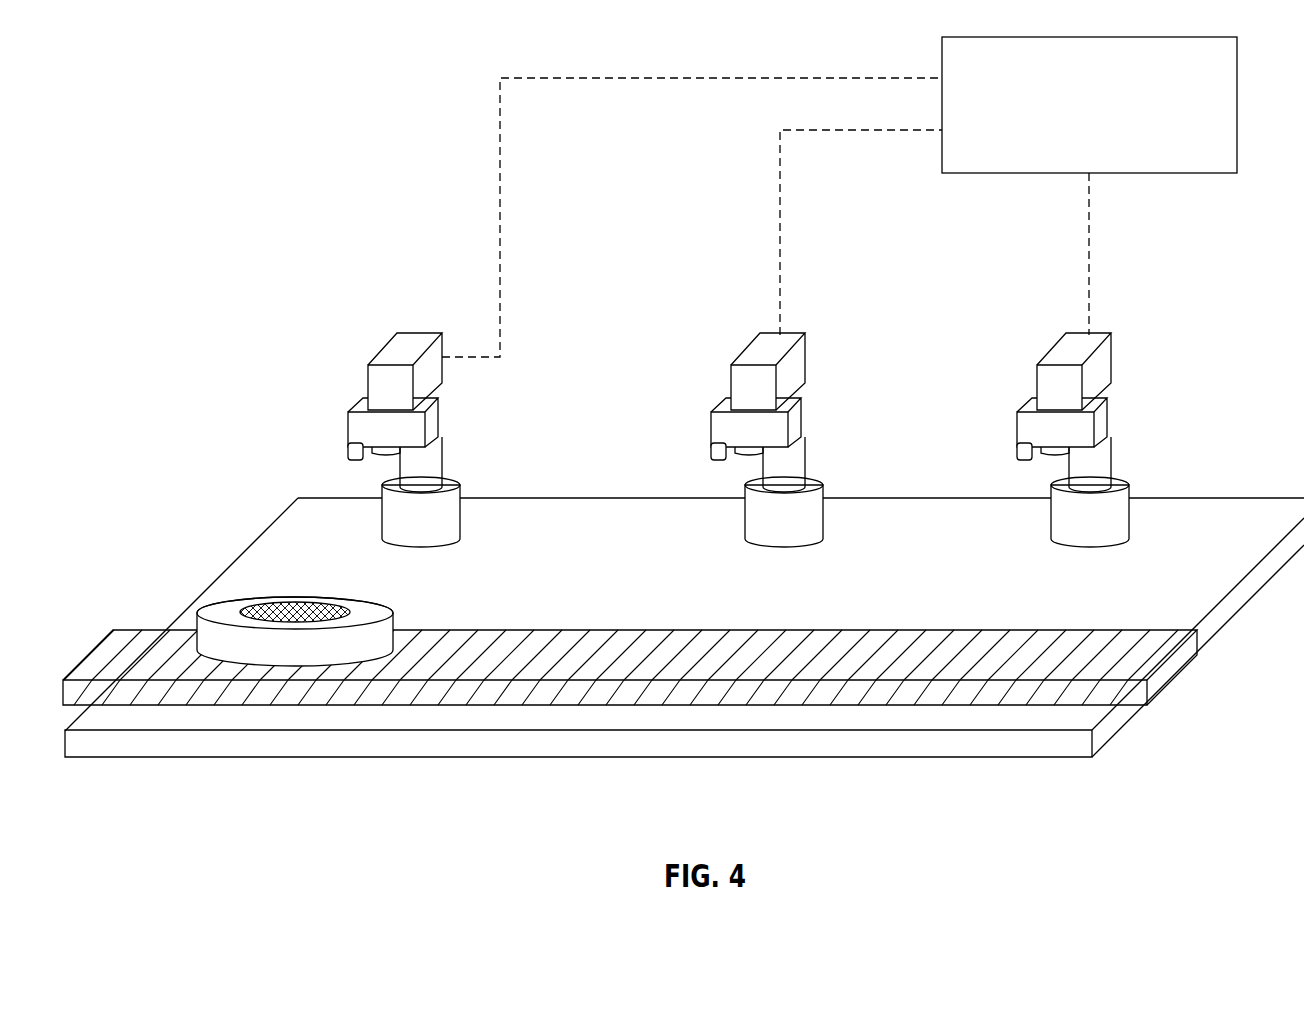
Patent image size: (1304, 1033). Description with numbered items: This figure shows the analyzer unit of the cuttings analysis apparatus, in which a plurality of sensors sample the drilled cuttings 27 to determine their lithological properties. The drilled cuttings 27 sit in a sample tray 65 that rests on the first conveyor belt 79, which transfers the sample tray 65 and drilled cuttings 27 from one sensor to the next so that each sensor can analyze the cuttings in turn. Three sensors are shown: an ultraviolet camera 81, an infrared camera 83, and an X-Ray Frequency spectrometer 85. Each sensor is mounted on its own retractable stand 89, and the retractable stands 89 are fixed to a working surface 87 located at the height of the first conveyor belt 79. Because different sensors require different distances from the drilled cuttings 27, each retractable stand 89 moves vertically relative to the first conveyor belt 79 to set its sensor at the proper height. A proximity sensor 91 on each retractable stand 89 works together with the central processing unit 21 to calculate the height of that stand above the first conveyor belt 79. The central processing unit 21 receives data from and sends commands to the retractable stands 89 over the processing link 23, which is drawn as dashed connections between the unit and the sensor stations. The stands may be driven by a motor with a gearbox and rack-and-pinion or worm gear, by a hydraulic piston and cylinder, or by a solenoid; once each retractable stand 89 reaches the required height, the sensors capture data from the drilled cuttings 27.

The central processing unit 21 is at (1075, 151).
The processing link 23 is at (1090, 280).
The drilled cuttings 27 is at (292, 597).
The sample tray 65 is at (190, 622).
The first conveyor belt 79 is at (723, 706).
The ultraviolet camera 81 is at (403, 355).
The infrared camera 83 is at (750, 355).
The X-Ray Frequency spectrometer 85 is at (1097, 362).
The working surface 87 is at (1097, 724).
The retractable stand 89 is at (465, 512).
The proximity sensor 91 is at (348, 452).